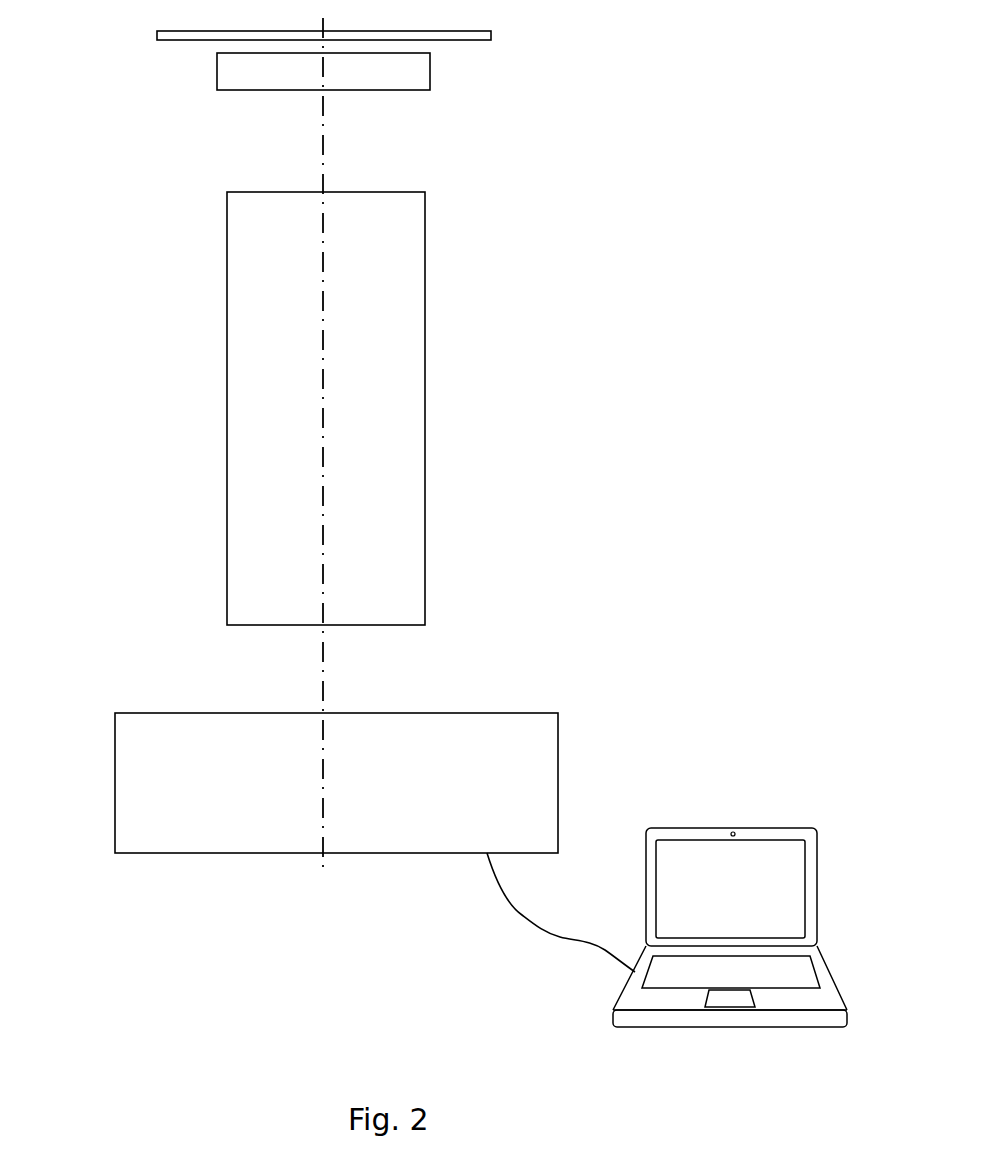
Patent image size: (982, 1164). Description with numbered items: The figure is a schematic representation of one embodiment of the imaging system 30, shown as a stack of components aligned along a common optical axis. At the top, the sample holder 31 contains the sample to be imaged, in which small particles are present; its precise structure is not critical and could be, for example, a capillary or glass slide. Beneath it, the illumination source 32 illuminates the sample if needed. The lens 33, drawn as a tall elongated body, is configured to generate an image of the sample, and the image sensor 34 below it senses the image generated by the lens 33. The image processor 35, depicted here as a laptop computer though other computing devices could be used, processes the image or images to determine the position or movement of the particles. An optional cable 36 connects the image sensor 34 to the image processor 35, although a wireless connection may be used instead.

The imaging system 30 is at (173, 443).
The sample holder 31 is at (157, 33).
The illumination source 32 is at (425, 103).
The lens 33 is at (227, 478).
The image sensor 34 is at (115, 725).
The image processor 35 is at (725, 825).
The cable 36 is at (530, 937).